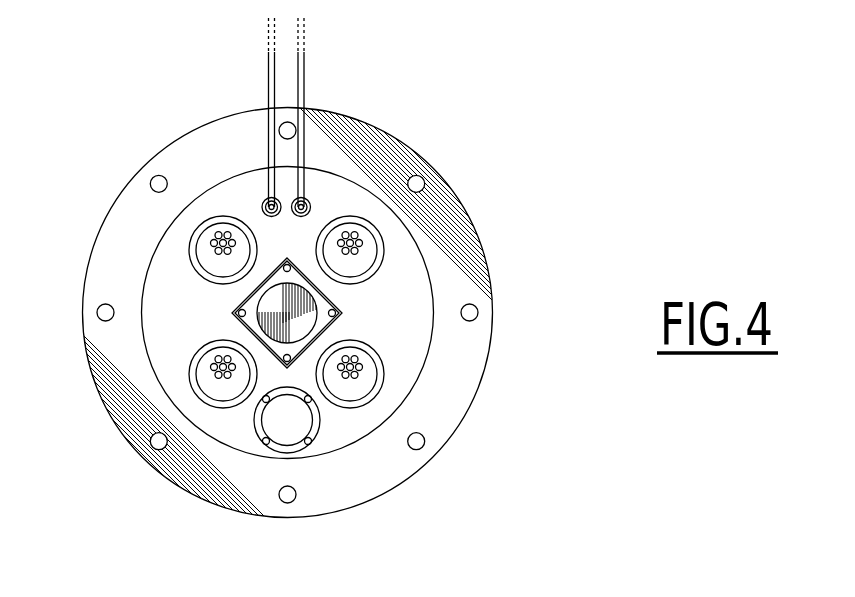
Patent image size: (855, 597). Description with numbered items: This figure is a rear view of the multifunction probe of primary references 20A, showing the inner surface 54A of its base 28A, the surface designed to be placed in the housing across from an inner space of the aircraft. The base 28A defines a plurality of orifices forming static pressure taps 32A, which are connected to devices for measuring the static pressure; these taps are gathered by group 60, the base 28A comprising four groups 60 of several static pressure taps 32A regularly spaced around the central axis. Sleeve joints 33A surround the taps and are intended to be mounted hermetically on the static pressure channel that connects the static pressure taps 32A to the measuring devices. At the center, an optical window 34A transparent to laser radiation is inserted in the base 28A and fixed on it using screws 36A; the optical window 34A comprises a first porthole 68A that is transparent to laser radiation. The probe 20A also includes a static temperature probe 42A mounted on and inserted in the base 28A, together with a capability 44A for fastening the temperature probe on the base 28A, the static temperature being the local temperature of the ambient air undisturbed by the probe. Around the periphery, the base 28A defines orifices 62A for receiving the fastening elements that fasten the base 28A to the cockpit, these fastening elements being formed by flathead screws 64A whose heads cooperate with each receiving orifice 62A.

The multifunction probe of primary references 20A is at (436, 480).
The base 28A is at (380, 133).
The static pressure taps 32A is at (223, 228).
The sleeve joints 33A is at (193, 259).
The optical window 34A is at (302, 310).
The screws 36A is at (307, 198).
The static temperature probe 42A is at (285, 416).
The capability for fastening the temperature probe 44A is at (315, 434).
The inner surface 54A is at (357, 203).
The group 60 is at (198, 238).
The orifices 62A is at (424, 183).
The flathead screws 64A is at (255, 321).
The first porthole 68A is at (273, 307).